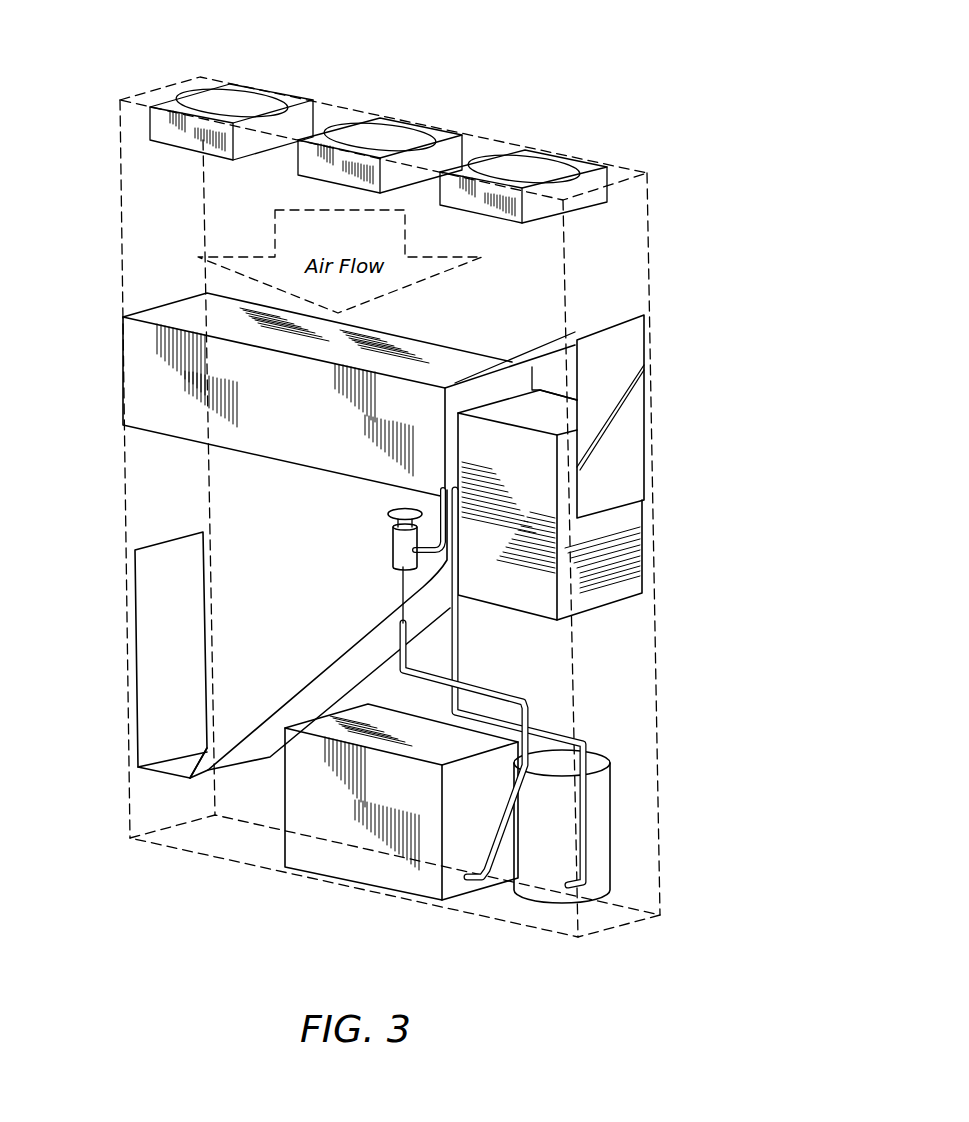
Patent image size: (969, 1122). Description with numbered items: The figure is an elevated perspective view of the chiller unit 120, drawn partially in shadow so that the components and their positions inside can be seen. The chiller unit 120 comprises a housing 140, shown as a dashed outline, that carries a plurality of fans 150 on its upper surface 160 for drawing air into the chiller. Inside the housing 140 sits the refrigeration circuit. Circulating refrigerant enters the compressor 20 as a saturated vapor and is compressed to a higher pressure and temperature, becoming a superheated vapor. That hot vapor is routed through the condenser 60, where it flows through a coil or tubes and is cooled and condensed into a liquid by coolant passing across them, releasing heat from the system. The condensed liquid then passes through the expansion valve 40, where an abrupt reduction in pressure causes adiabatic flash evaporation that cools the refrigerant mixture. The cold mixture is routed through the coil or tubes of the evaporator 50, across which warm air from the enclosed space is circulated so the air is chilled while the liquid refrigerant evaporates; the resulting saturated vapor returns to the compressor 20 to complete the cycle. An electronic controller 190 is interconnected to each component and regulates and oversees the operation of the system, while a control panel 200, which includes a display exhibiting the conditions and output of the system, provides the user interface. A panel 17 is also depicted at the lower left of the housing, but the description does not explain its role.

The chiller unit 120 is at (612, 93).
The housing 140 is at (143, 222).
The upper surface 160 is at (297, 127).
The fans 150 is at (377, 133).
The evaporator 50 is at (157, 384).
The control panel 200 is at (610, 465).
The electronic controller 190 is at (618, 575).
The side panel / divider 17 is at (137, 682).
The expansion valve 40 is at (393, 546).
The condenser 60 is at (330, 852).
The compressor 20 is at (612, 850).